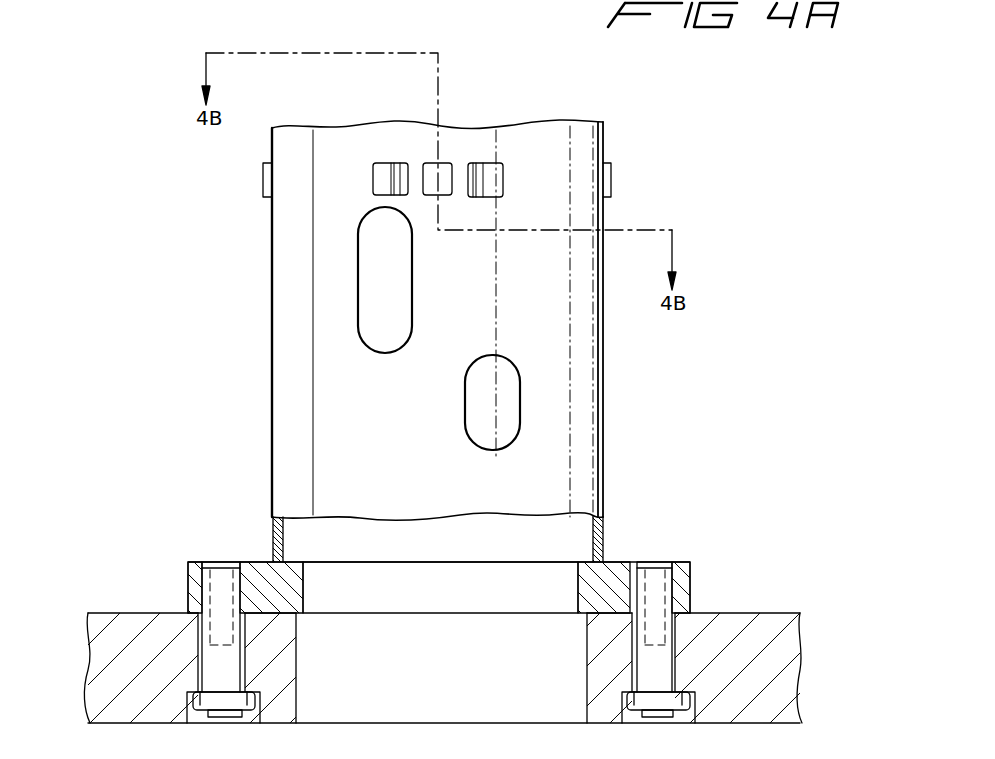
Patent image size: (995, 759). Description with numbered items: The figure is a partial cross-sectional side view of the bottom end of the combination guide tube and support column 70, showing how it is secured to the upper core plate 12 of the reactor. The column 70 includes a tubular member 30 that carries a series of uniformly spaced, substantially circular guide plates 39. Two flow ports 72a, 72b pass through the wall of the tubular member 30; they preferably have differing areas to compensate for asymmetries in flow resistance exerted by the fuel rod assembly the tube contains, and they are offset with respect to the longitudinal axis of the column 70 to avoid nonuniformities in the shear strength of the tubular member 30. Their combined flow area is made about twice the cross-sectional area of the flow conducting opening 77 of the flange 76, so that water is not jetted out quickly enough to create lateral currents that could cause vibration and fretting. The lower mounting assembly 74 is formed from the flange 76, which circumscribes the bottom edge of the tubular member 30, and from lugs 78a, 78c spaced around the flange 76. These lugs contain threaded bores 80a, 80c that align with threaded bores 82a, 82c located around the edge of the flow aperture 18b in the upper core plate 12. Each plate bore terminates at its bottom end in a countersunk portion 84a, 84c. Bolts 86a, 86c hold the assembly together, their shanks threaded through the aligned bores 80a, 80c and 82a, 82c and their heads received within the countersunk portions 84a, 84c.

The upper core plate 12 is at (785, 672).
The flow aperture 18b is at (585, 670).
The tubular member 30 is at (607, 432).
The guide plates 39 is at (492, 178).
The combination guide tube and support column 70 is at (184, 296).
The flow port 72a is at (360, 290).
The flow port 72b is at (510, 390).
The lower mounting assembly 74 is at (193, 538).
The flange 76 is at (607, 577).
The flow conducting opening 77 is at (303, 590).
The lug 78a is at (198, 595).
The lug 78c is at (688, 592).
The threaded bore 80a is at (227, 563).
The threaded bore 80c is at (667, 580).
The threaded bore 82a is at (208, 663).
The threaded bore 82c is at (672, 665).
The countersunk portion 84a is at (252, 707).
The countersunk portion 84c is at (692, 710).
The bolt 86a is at (223, 698).
The bolt 86c is at (632, 700).